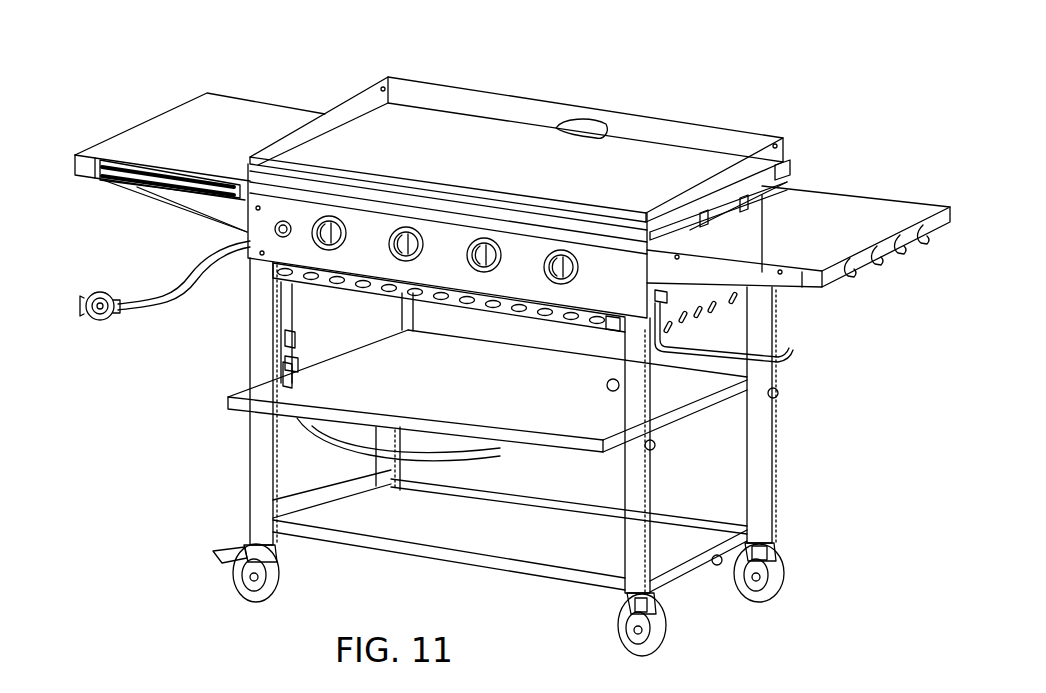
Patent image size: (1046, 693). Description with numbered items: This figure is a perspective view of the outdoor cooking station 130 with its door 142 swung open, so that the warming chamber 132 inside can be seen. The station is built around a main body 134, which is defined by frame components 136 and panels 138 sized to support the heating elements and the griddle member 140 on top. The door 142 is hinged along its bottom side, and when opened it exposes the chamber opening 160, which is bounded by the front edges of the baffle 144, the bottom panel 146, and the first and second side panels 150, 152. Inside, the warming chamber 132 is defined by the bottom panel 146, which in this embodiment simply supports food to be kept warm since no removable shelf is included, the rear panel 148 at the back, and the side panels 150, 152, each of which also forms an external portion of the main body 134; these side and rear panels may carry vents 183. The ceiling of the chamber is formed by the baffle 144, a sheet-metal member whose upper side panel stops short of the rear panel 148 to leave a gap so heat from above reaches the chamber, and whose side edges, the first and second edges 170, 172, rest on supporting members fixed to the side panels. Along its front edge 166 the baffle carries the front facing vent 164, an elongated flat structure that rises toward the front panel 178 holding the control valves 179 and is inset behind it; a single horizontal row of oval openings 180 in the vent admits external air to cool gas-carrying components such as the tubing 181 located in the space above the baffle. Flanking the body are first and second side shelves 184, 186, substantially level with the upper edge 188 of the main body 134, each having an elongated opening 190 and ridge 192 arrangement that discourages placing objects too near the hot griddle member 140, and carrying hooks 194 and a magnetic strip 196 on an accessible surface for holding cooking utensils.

The outdoor cooking station 130 is at (843, 89).
The warming chamber 132 is at (550, 398).
The main body 134 is at (586, 425).
The frame components 136 is at (777, 463).
The wire rack 138 is at (727, 346).
The griddle member 140 is at (507, 90).
The door 142 is at (296, 421).
The baffle 144 is at (375, 297).
The bottom panel 146 is at (395, 407).
The rear panel 148 is at (530, 334).
The first side panel 150 is at (300, 357).
The second side panel 152 is at (673, 403).
The chamber opening 160 is at (300, 331).
The front facing vent 164 is at (457, 300).
The front edge 166 is at (577, 328).
The first edge 170 is at (273, 303).
The second edge 172 is at (608, 315).
The front panel 178 is at (260, 207).
The control valves 179 is at (329, 222).
The openings 180 is at (343, 284).
The tubing 181 is at (138, 312).
The vents 183 is at (780, 304).
The first side shelf 184 is at (181, 134).
The second side shelf 186 is at (804, 223).
The upper edge 188 is at (777, 167).
The elongated opening 190 is at (710, 224).
The ridge 192 is at (767, 204).
The hooks 194 is at (927, 244).
The magnetic strip 196 is at (106, 178).